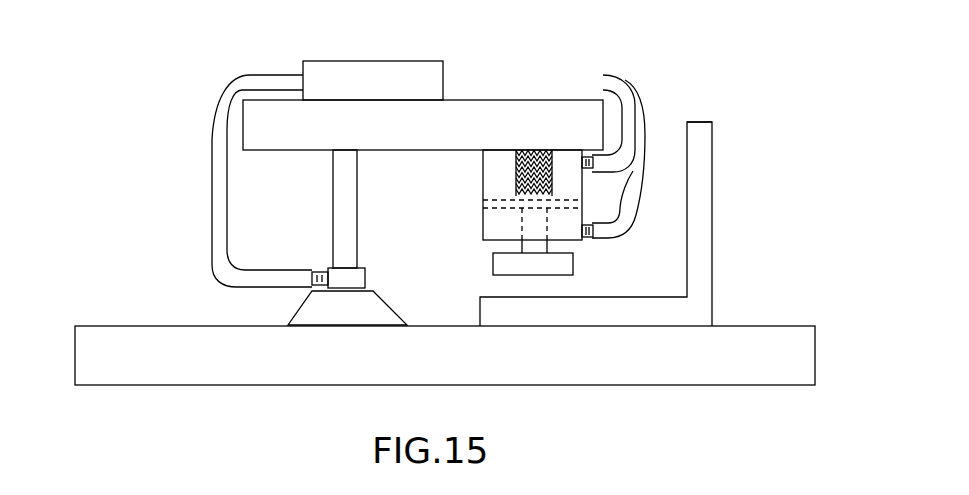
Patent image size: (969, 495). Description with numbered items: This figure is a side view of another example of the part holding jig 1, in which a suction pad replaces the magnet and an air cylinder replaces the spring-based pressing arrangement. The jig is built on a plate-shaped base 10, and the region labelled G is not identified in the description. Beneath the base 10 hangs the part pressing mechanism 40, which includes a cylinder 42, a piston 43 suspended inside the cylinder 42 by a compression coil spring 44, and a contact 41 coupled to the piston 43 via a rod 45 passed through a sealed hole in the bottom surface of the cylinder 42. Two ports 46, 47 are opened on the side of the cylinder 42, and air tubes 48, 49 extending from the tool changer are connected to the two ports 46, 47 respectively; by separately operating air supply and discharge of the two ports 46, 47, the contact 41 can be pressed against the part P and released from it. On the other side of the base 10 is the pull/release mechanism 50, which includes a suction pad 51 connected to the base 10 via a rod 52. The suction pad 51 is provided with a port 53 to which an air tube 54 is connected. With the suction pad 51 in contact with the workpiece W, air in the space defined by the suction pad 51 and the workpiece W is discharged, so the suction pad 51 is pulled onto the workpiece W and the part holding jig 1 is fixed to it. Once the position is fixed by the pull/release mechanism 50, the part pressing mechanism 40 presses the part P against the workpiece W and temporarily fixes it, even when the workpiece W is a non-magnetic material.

The part holding jig 1 is at (148, 116).
The base 10 is at (500, 100).
The gripping unit G is at (310, 65).
The part pressing mechanism 40 is at (664, 107).
The contact 41 is at (561, 263).
The cylinder 42 is at (483, 237).
The piston 43 is at (483, 202).
The compression coil spring 44 is at (513, 156).
The rod 45 is at (533, 218).
The port 46 is at (584, 173).
The port 47 is at (588, 238).
The air tube 48 is at (630, 92).
The air tube 49 is at (626, 229).
The pull/release mechanism 50 is at (206, 278).
The suction pad 51 is at (305, 300).
The rod 52 is at (333, 193).
The port 53 is at (318, 272).
The air tube 54 is at (222, 193).
The part P is at (705, 153).
The workpiece W is at (781, 326).